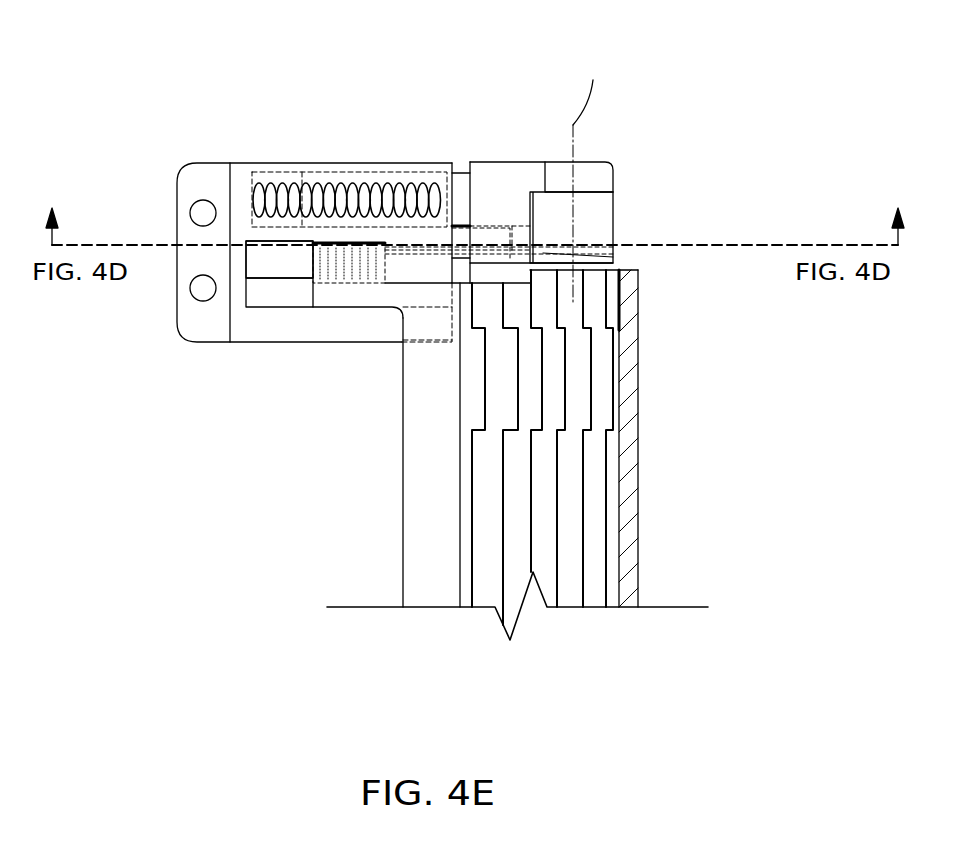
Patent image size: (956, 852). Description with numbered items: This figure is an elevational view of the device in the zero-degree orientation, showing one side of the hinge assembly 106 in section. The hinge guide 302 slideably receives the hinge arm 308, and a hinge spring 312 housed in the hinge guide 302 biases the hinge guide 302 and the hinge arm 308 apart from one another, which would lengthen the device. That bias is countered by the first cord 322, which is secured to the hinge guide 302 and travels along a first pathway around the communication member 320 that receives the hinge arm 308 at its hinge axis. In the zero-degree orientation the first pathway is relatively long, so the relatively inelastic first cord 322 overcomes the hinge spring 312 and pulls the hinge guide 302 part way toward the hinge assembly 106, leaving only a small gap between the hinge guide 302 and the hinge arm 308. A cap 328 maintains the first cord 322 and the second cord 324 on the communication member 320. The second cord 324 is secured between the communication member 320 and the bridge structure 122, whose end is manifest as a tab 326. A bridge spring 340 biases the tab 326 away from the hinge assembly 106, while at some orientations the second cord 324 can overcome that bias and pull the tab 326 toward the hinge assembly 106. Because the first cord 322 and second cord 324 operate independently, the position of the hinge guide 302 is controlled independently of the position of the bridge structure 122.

The hinge assembly 106 is at (672, 73).
The hinge guide 302 is at (250, 150).
The hinge spring 312 is at (381, 186).
The first cord 322 is at (462, 152).
The hinge arm 308 is at (594, 162).
The communication member 320 is at (571, 227).
The cap 328 is at (610, 254).
The second cord 324 is at (545, 253).
The tab 326 is at (312, 298).
The bridge spring 340 is at (365, 278).
The bridge structure 122 is at (402, 482).